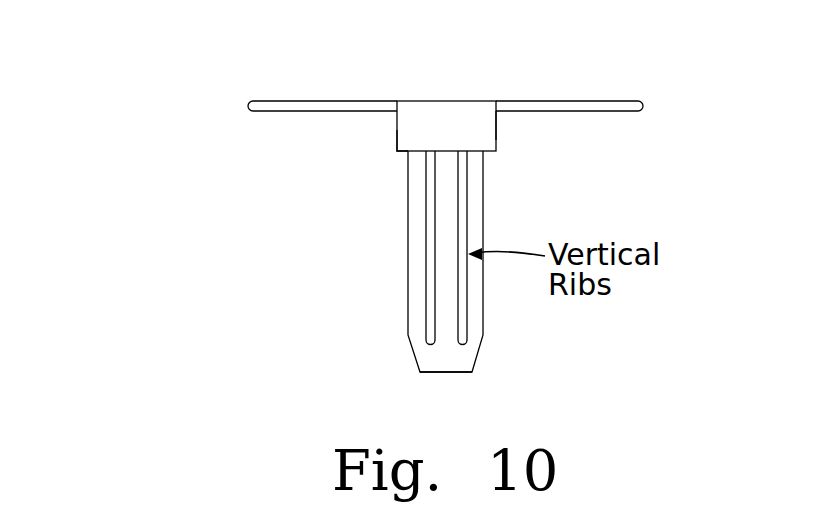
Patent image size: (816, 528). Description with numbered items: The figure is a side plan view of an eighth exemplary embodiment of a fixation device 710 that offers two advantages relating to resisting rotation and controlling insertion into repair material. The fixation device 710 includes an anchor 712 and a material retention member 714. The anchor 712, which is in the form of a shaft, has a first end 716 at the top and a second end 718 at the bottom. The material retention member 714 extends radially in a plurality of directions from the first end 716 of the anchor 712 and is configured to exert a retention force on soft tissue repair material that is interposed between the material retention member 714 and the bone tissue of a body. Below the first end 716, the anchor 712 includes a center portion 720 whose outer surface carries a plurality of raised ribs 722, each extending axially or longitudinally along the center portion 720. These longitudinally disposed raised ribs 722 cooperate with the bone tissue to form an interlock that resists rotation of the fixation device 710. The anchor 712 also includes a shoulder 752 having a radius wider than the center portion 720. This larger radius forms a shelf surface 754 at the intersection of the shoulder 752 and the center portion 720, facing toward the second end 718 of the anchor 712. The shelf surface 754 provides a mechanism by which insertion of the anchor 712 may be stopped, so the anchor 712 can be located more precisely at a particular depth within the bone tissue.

The fixation device 710 is at (198, 81).
The anchor 712 is at (523, 203).
The material retention member 714 is at (659, 103).
The first end 716 is at (425, 79).
The second end 718 is at (425, 373).
The center portion 720 is at (443, 247).
The raised ribs 722 is at (465, 293).
The shoulder 752 is at (497, 128).
The shelf surface 754 is at (401, 152).